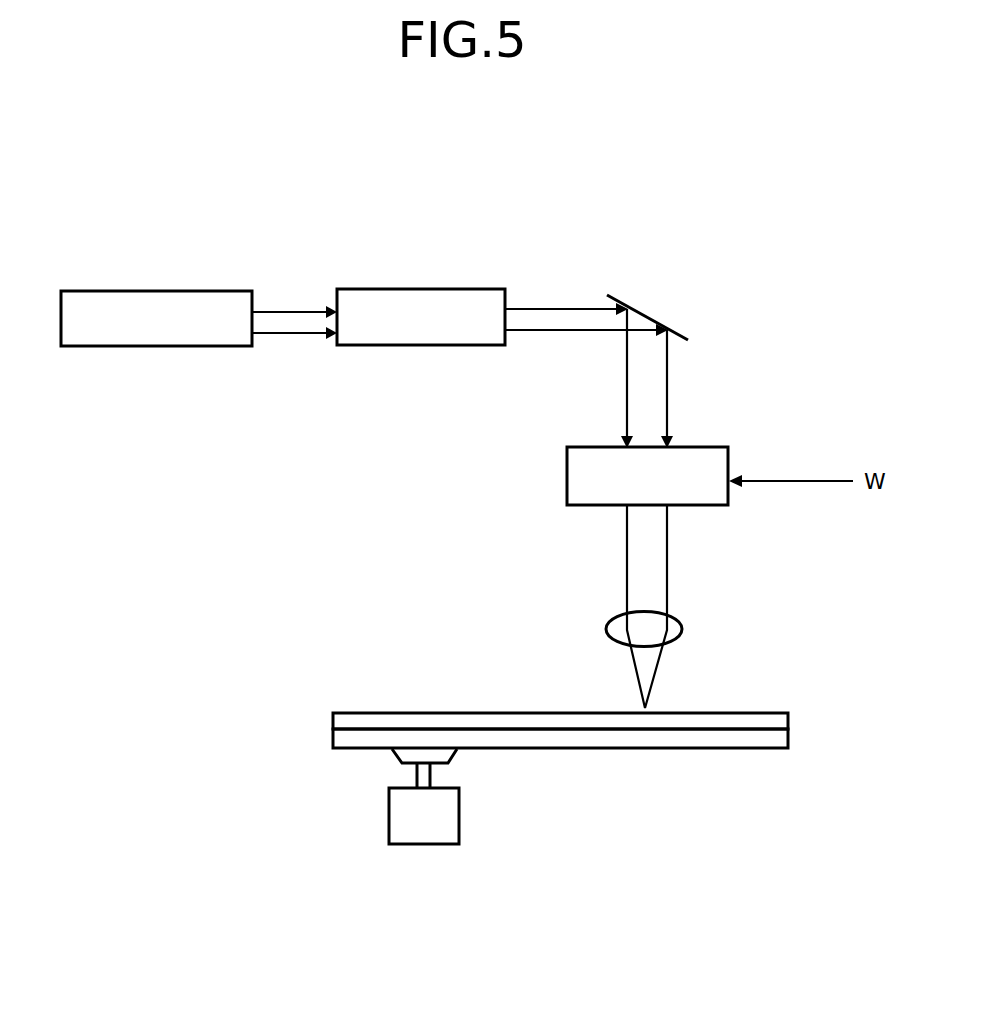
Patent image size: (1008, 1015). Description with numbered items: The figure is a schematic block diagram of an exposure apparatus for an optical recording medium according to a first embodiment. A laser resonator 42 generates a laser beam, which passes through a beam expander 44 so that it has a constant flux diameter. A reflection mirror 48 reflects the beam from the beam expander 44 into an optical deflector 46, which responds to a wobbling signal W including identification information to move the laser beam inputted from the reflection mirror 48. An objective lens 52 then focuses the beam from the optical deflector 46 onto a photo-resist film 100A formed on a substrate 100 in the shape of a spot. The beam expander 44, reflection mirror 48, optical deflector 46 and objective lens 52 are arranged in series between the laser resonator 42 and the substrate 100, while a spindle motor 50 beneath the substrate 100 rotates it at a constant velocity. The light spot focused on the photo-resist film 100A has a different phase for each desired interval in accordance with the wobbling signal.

The laser resonator 42 is at (222, 291).
The beam expander 44 is at (474, 289).
The optical deflector 46 is at (729, 471).
The reflection mirror 48 is at (648, 318).
The spindle motor 50 is at (460, 815).
The objective lens 52 is at (685, 620).
The substrate 100 is at (792, 742).
The photo-resist film 100A is at (788, 720).